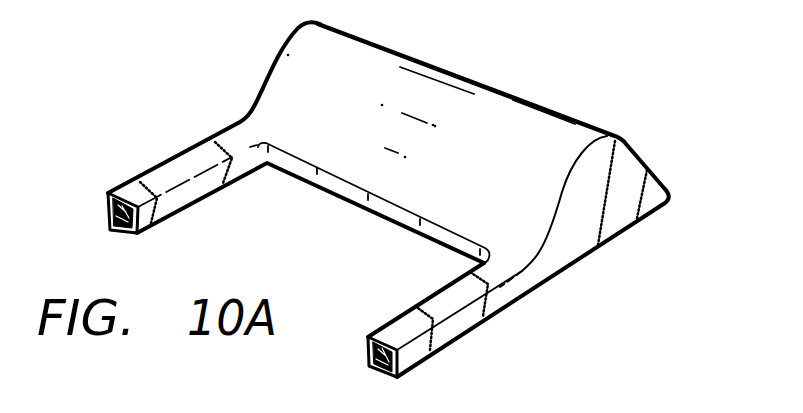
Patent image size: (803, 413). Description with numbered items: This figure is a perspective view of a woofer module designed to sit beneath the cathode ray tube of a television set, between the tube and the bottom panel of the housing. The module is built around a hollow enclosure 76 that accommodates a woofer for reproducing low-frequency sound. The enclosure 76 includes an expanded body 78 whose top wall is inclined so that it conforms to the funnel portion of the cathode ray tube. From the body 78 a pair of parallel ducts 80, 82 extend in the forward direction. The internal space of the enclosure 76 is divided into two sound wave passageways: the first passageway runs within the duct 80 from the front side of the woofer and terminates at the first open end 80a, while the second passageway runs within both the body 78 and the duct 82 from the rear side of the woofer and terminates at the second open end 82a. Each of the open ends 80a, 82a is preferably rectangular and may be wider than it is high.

The hollow enclosure 76 is at (578, 108).
The expanded body 78 is at (462, 104).
The duct 80 is at (412, 314).
The first open end 80a is at (369, 366).
The duct 82 is at (137, 164).
The second open end 82a is at (107, 211).